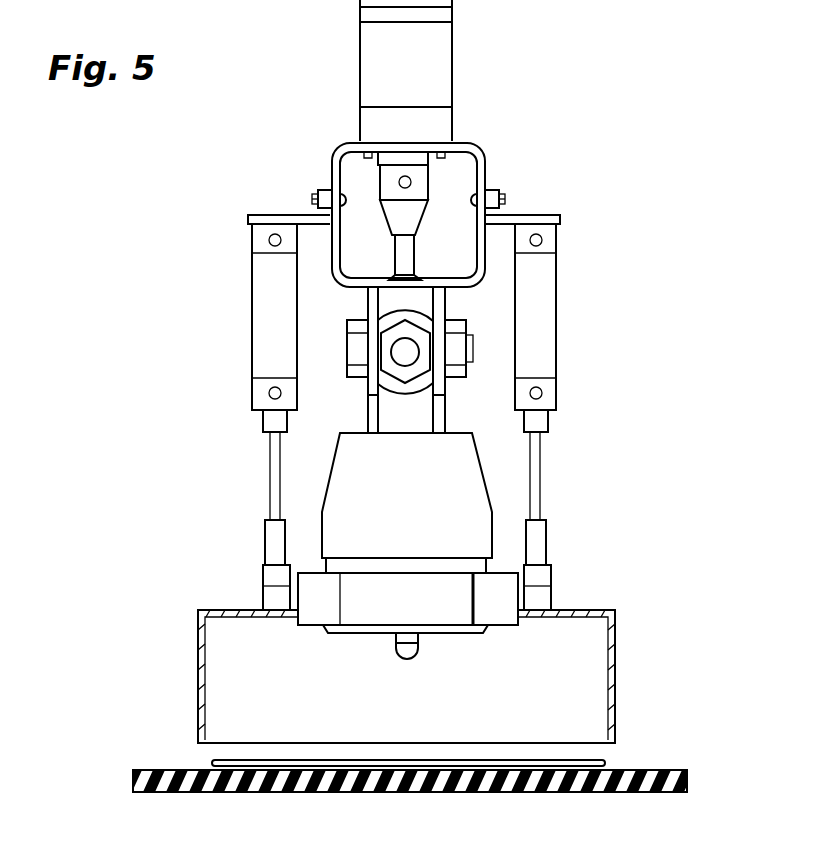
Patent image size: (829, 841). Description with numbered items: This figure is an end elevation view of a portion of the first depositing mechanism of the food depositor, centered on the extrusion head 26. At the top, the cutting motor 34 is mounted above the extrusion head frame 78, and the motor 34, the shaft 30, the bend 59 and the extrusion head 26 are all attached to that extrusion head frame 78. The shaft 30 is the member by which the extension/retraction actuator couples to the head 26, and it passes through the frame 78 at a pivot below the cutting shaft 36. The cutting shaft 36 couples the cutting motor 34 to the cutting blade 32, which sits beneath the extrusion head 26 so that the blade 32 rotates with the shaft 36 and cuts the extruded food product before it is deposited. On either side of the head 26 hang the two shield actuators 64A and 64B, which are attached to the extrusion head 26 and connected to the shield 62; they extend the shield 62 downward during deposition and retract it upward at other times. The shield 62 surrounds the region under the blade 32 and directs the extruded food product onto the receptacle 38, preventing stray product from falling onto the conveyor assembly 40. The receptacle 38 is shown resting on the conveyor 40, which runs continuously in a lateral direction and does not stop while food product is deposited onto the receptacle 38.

The extrusion head 26 is at (498, 597).
The shaft 30 is at (405, 352).
The cutting blade 32 is at (467, 633).
The cutting motor 34 is at (435, 62).
The cutting shaft 36 is at (405, 253).
The receptacle 38 is at (605, 764).
The conveyor assembly 40 is at (673, 792).
The bend 59 is at (428, 510).
The shield 62 is at (618, 628).
The shield actuator 64A is at (536, 273).
The shield actuator 64B is at (267, 323).
The extrusion head frame 78 is at (333, 162).